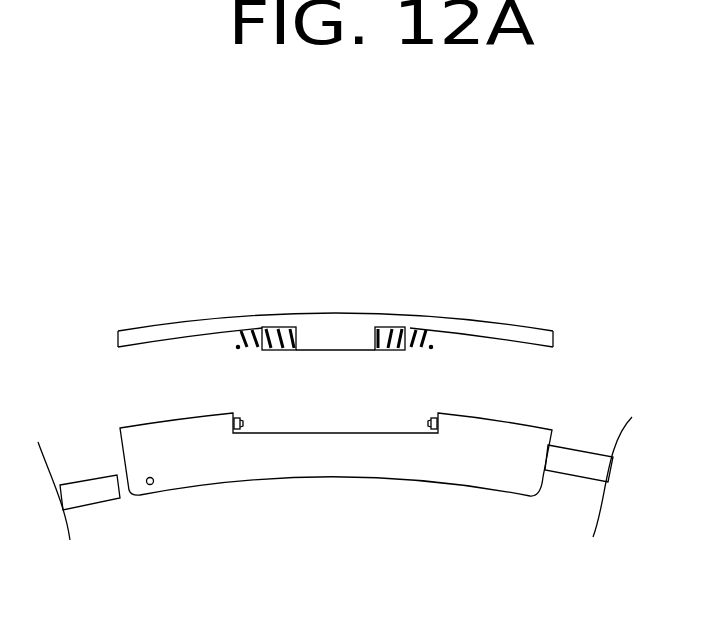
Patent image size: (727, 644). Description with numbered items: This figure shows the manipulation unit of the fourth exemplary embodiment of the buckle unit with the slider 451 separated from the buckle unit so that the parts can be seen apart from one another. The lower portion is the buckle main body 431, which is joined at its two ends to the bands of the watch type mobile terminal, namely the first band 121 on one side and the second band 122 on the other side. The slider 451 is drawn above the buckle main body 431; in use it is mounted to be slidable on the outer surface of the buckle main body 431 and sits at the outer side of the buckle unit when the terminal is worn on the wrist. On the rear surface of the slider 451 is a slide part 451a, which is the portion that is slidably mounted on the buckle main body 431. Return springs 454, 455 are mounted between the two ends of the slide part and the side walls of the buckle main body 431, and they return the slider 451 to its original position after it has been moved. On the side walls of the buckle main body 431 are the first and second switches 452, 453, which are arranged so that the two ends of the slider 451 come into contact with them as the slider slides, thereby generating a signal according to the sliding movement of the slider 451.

The slider 451 is at (382, 313).
The slide part 451a is at (318, 330).
The return spring 454 is at (245, 333).
The return spring 455 is at (443, 330).
The first switch 452 is at (250, 413).
The second switch 453 is at (420, 413).
The buckle main body 431 is at (328, 465).
The second band 122 is at (93, 497).
The first band 121 is at (577, 467).